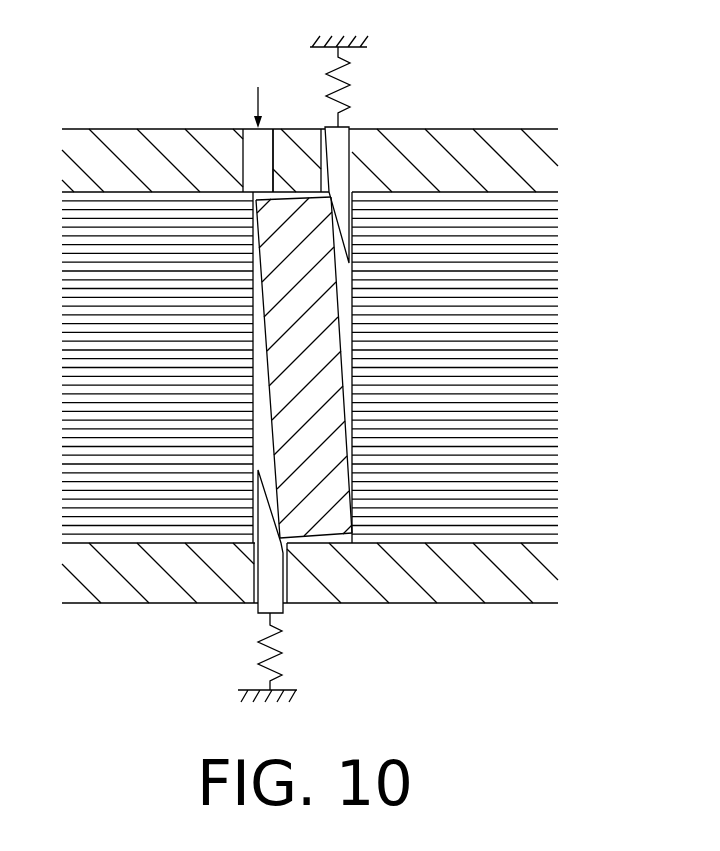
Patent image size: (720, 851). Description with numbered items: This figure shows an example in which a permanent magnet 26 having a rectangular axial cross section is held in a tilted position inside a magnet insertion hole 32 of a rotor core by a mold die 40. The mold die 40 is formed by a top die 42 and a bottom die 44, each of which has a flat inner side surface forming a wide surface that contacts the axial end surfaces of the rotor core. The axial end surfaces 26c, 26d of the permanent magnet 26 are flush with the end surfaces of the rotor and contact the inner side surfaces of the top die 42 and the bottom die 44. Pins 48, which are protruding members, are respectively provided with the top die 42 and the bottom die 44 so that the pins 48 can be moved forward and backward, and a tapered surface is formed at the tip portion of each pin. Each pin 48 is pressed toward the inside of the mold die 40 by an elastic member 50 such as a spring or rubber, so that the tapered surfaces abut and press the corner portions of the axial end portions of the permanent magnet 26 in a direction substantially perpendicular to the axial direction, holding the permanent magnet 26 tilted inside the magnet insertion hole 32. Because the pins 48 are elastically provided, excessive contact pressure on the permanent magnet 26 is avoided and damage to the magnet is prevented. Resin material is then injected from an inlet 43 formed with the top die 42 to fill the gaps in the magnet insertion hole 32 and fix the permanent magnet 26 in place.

The permanent magnet 26 is at (273, 362).
The axial end surface of permanent magnet 26c is at (292, 195).
The axial end surface of permanent magnet 26d is at (331, 537).
The magnet insertion hole 32 is at (253, 457).
The mold die 40 is at (511, 126).
The top die 42 is at (462, 129).
The inlet 43 is at (251, 165).
The bottom die 44 is at (455, 603).
The pin 48 is at (350, 128).
The elastic member 50 is at (333, 72).